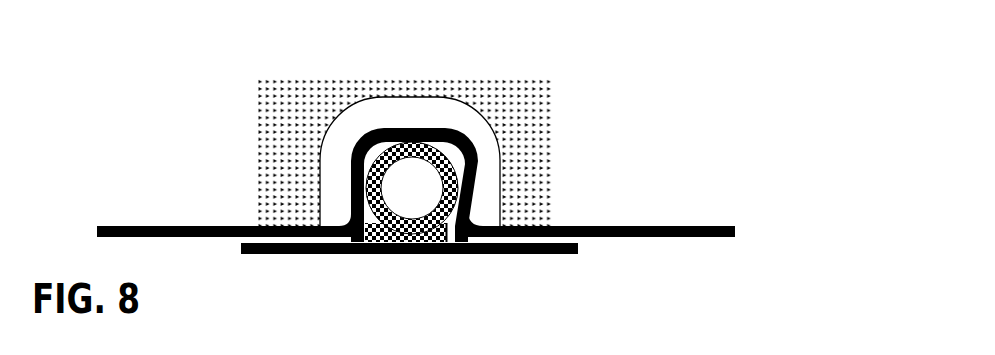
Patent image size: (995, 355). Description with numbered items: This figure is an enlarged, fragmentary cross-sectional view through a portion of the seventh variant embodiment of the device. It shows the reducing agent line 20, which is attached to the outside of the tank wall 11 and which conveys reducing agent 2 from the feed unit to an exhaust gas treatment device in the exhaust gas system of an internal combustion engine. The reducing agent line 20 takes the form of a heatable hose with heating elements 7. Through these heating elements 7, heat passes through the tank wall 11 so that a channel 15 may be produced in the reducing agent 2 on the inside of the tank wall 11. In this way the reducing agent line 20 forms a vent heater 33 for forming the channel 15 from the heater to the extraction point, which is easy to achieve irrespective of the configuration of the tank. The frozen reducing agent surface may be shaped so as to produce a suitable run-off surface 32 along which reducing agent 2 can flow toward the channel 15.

The reducing agent 2 is at (283, 133).
The heating elements 7 is at (393, 148).
The channel 15 is at (437, 120).
The run-off surface 32 is at (474, 143).
The reducing agent line 20 is at (400, 196).
The tank wall 11 is at (587, 224).
The vent heater 33 is at (437, 255).